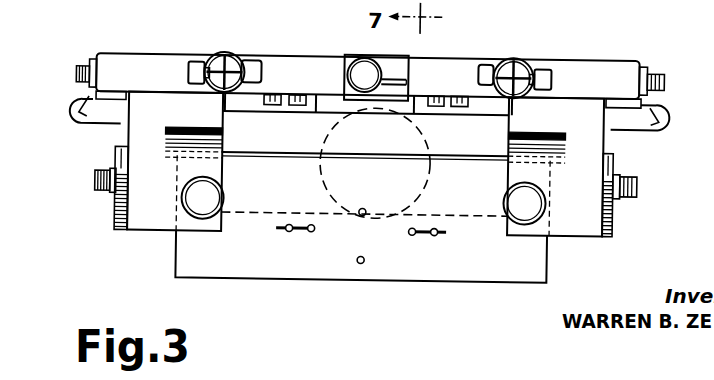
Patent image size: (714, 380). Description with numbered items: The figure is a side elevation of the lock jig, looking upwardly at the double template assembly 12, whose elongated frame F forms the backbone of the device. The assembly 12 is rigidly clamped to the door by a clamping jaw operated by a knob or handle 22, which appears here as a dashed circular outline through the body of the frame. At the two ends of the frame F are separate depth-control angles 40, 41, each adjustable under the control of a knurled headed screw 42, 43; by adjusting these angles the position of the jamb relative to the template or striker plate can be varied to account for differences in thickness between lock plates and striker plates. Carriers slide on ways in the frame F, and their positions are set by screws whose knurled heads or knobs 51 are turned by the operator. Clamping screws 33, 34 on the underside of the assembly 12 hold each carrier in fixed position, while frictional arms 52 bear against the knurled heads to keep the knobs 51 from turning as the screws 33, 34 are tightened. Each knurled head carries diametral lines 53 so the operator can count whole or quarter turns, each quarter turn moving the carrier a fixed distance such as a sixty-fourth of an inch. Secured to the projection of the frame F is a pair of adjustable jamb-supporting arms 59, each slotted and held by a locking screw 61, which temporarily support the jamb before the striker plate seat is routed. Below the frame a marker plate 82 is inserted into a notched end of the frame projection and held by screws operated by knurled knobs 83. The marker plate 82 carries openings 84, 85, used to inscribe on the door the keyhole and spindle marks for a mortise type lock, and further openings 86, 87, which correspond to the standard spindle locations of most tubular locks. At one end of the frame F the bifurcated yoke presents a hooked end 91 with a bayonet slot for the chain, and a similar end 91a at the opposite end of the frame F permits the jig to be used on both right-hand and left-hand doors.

The double template assembly 12 is at (593, 35).
The frame F is at (121, 66).
The knob or handle 22 is at (413, 136).
The clamping screw 33 is at (272, 95).
The clamping screw 34 is at (298, 95).
The depth-control angle 40 is at (640, 61).
The depth-control angle 41 is at (95, 56).
The knurled headed screw 42 is at (663, 80).
The knurled headed screw 43 is at (75, 78).
The knurled head or knob 51 is at (238, 62).
The frictional arm 52 is at (186, 72).
The diametral line 53 is at (212, 57).
The jamb-supporting arm 59 is at (119, 210).
The locking screw 61 is at (95, 182).
The marker plate 82 is at (322, 268).
The knurled knob 83 is at (216, 197).
The opening 84 is at (436, 235).
The opening 85 is at (289, 233).
The opening 86 is at (361, 256).
The opening 87 is at (364, 208).
The yoke end 91 is at (668, 124).
The yoke end 91a is at (93, 116).